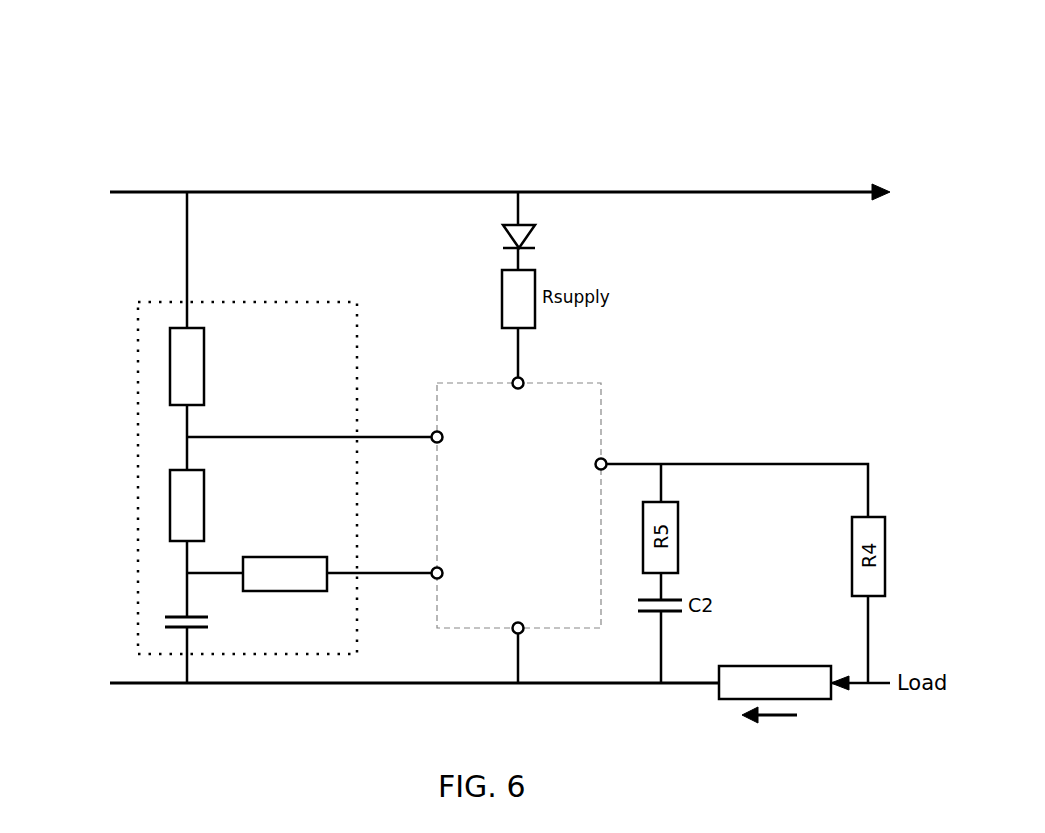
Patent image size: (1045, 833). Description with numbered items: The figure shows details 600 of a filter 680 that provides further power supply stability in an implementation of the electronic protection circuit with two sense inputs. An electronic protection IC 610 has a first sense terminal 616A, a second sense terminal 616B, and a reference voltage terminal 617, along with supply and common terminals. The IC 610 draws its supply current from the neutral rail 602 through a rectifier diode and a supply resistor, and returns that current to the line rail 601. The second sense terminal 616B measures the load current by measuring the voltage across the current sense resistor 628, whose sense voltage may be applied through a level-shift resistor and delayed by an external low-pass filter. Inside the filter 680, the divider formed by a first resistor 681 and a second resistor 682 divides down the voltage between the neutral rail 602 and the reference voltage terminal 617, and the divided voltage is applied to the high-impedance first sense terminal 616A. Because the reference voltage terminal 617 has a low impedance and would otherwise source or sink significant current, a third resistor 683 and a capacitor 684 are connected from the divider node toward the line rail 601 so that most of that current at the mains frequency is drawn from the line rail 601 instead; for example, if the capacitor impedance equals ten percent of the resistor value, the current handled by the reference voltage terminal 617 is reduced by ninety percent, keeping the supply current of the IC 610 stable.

The details 600 is at (130, 82).
The line rail 601 is at (130, 683).
The neutral rail 602 is at (130, 192).
The electronic protection IC 610 is at (539, 503).
The first sense terminal 616A is at (427, 425).
The second sense terminal 616B is at (605, 452).
The reference voltage terminal 617 is at (427, 564).
The current sense resistor 628 is at (800, 666).
The filter 680 is at (278, 458).
The resistor R1 681 is at (208, 367).
The resistor R2 682 is at (208, 490).
The resistor R3 683 is at (292, 557).
The capacitor C1 684 is at (213, 620).